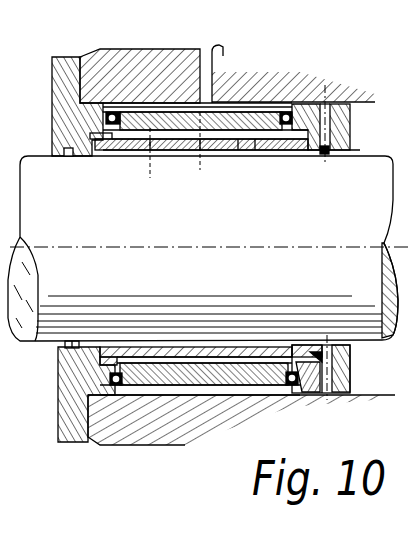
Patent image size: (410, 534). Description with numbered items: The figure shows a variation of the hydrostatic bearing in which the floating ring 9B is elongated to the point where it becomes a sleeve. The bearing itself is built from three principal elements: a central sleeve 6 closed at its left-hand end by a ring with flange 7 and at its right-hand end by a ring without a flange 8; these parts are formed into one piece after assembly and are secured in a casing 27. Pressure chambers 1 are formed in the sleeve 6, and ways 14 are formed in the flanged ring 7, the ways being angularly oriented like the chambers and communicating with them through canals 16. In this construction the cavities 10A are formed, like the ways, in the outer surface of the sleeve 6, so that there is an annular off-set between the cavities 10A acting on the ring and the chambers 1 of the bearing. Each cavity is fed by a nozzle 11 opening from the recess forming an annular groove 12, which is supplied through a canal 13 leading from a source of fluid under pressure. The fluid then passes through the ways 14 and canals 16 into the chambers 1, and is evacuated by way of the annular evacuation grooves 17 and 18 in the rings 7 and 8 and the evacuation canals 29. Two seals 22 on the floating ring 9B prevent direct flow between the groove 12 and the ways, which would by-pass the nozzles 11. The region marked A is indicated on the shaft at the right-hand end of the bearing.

The pressure chambers 1 is at (293, 157).
The central sleeve 6 is at (118, 350).
The ring with flange 7 is at (63, 340).
The ring without a flange 8 is at (166, 157).
The floating ring 9B is at (231, 157).
The cavities 10A is at (178, 360).
The nozzle 11 is at (218, 360).
The annular groove 12 is at (262, 385).
The canal 13 is at (203, 49).
The ways 14 is at (150, 157).
The canals 16 is at (128, 157).
The annular evacuation groove 17 is at (72, 158).
The annular evacuation groove 18 is at (323, 157).
The seals 22 is at (130, 395).
The casing 27 is at (113, 441).
The evacuation canals 29 is at (352, 126).
The region A is at (362, 174).